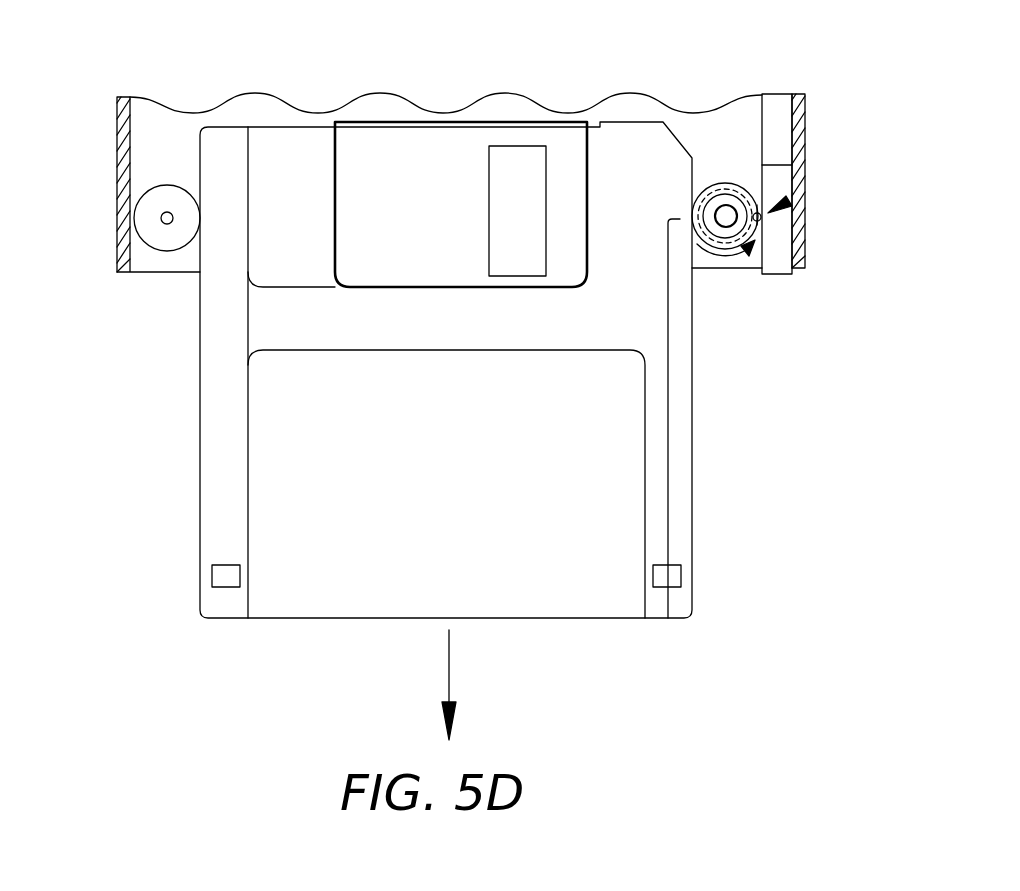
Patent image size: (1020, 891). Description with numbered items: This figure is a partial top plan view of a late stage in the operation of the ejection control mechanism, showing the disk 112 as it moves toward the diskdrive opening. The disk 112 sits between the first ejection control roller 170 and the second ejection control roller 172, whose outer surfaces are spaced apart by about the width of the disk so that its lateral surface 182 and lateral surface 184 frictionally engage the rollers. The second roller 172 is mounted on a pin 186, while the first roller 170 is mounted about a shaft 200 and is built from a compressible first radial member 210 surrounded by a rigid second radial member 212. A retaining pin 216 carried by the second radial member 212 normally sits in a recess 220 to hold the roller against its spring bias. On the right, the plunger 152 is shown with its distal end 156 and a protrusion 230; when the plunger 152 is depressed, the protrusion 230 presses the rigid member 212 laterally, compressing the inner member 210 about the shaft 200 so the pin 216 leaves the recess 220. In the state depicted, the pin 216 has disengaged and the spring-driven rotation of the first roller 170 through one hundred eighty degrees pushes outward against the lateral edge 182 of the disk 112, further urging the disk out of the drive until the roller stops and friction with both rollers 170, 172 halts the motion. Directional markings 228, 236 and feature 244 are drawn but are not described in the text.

The disk 112 is at (456, 488).
The plunger 152 is at (777, 265).
The distal end 156 is at (805, 130).
The first ejection control roller 170 is at (720, 263).
The second ejection control roller 172 is at (167, 192).
The lateral surface 182 is at (713, 163).
The lateral surface 184 is at (200, 385).
The pin 186 is at (165, 216).
The shaft 200 is at (727, 218).
The first radial member 210 is at (740, 226).
The second radial member 212 is at (712, 188).
The retaining pin 216 is at (761, 214).
The recess 220 is at (698, 213).
The force direction 228 is at (788, 201).
The protrusion 230 is at (758, 205).
The ejection direction 236 is at (449, 668).
The guide groove 244 is at (668, 415).